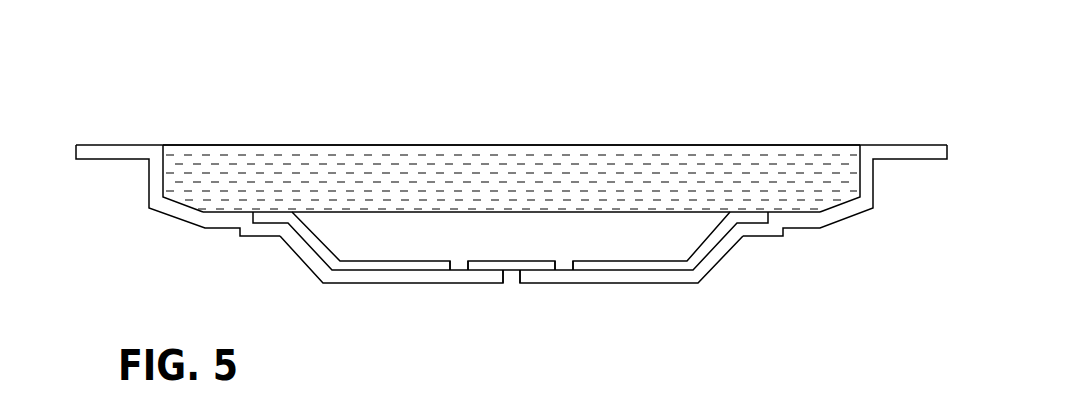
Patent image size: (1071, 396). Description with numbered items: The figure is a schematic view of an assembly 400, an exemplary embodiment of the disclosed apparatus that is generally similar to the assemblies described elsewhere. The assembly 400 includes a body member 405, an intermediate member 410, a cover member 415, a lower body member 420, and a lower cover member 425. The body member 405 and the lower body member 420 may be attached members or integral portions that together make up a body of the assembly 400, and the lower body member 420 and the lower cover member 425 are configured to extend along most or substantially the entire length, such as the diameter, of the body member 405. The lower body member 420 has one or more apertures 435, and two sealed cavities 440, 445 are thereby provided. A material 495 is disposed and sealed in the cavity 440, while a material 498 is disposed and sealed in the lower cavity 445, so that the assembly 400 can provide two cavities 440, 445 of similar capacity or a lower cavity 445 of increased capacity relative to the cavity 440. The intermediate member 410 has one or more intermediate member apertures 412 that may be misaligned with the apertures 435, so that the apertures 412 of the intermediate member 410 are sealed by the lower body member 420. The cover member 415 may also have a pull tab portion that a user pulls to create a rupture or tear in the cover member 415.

The assembly 400 is at (212, 102).
The body member 405 is at (133, 197).
The intermediate member 410 is at (340, 251).
The intermediate member apertures 412 is at (462, 264).
The cover member 415 is at (315, 142).
The lower body member 420 is at (316, 287).
The lower cover member 425 is at (709, 197).
The apertures 435 is at (510, 274).
The cavity 440 is at (822, 158).
The cavity 445 is at (690, 236).
The material 495 is at (772, 157).
The material 498 is at (640, 247).